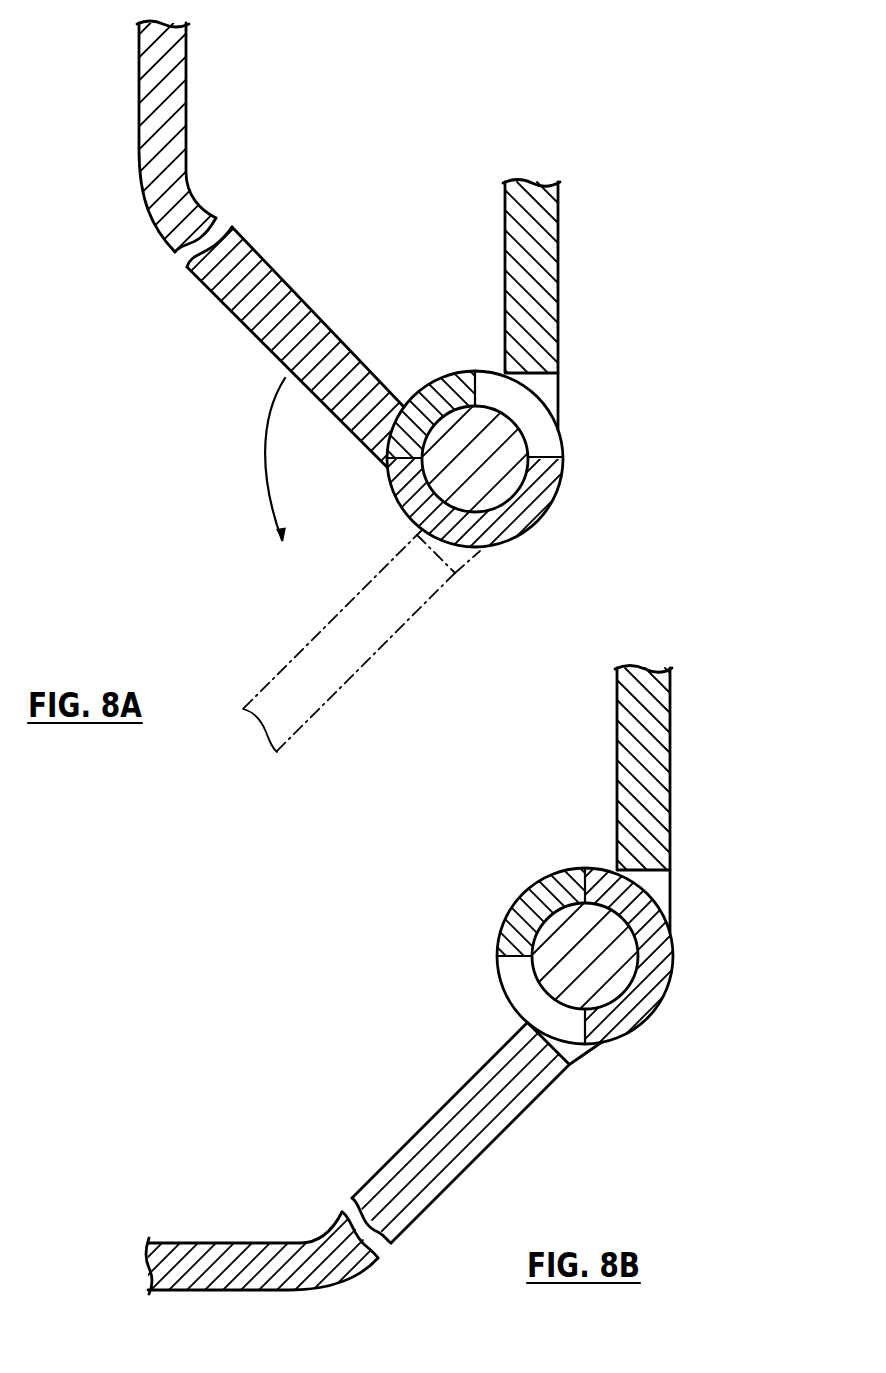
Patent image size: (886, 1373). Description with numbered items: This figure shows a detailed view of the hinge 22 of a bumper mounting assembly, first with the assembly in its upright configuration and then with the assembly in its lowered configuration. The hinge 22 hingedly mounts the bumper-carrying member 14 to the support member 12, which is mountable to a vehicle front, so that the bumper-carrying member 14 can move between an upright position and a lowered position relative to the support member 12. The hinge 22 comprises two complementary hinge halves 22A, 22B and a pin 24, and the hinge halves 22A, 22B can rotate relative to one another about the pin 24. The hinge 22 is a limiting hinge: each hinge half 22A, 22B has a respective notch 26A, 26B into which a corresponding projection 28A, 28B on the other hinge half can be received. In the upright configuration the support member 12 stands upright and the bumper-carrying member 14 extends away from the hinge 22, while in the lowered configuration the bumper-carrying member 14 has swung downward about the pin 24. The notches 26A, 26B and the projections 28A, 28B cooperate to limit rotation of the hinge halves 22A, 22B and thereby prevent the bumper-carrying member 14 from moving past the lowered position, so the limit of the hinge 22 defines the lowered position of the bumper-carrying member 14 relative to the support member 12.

In FIG. 8A, the support member 12 is at (541, 263).
In FIG. 8B, the support member 12 is at (662, 727).
In FIG. 8A, the bumper-carrying member 14 is at (234, 290).
In FIG. 8B, the bumper-carrying member 14 is at (427, 1152).
In FIG. 8A, the hinge 22 is at (492, 560).
In FIG. 8B, the hinge 22 is at (621, 1058).
In FIG. 8A, the hinge half 22A is at (543, 540).
In FIG. 8B, the hinge half 22A is at (668, 1005).
In FIG. 8A, the hinge half 22B is at (452, 370).
In FIG. 8B, the hinge half 22B is at (512, 893).
In FIG. 8A, the pin 24 is at (532, 446).
In FIG. 8B, the pin 24 is at (611, 951).
In FIG. 8B, the notch 26A is at (527, 998).
In FIG. 8A, the notch 26B is at (532, 415).
In FIG. 8A, the projection 28A is at (543, 480).
In FIG. 8B, the projection 28A is at (603, 878).
In FIG. 8A, the projection 28B is at (405, 447).
In FIG. 8B, the projection 28B is at (507, 935).